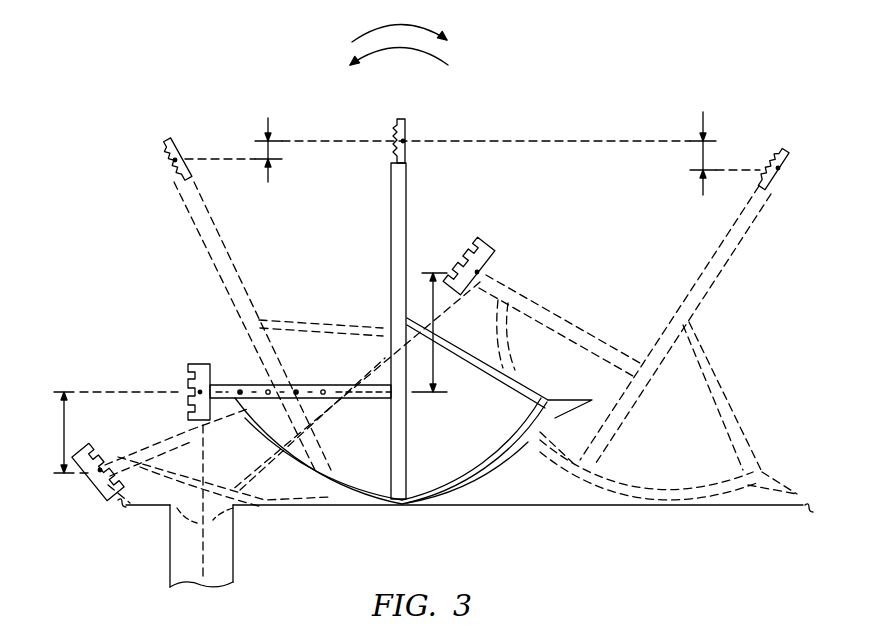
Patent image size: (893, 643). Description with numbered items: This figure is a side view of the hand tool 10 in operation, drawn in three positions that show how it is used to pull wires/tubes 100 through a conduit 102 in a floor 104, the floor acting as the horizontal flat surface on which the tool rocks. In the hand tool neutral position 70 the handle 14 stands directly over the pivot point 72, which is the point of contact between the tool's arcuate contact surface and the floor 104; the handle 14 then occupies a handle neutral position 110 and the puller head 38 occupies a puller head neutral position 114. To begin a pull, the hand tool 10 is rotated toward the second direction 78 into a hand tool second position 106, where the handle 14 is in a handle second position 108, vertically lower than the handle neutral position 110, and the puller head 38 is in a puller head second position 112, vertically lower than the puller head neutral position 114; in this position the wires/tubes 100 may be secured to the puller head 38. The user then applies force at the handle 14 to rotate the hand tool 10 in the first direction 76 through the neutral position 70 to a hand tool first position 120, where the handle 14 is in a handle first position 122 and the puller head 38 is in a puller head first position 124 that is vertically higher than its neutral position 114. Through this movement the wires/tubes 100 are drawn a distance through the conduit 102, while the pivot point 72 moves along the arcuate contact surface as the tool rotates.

The hand tool 10 is at (252, 72).
The handle 14 is at (393, 132).
The puller head 38 is at (480, 250).
The hand tool neutral position 70 is at (388, 112).
The pivot point 72 is at (257, 507).
The first direction 76 is at (373, 25).
The second direction 78 is at (428, 55).
The wires/tubes 100 is at (203, 565).
The conduit 102 is at (170, 548).
The floor 104 is at (548, 506).
The hand tool second position 106 is at (149, 130).
The handle second position 108 is at (175, 160).
The handle neutral position 110 is at (404, 143).
The puller head second position 112 is at (100, 472).
The puller head neutral position 114 is at (200, 392).
The hand tool first position 120 is at (783, 135).
The handle first position 122 is at (778, 168).
The puller head first position 124 is at (477, 272).